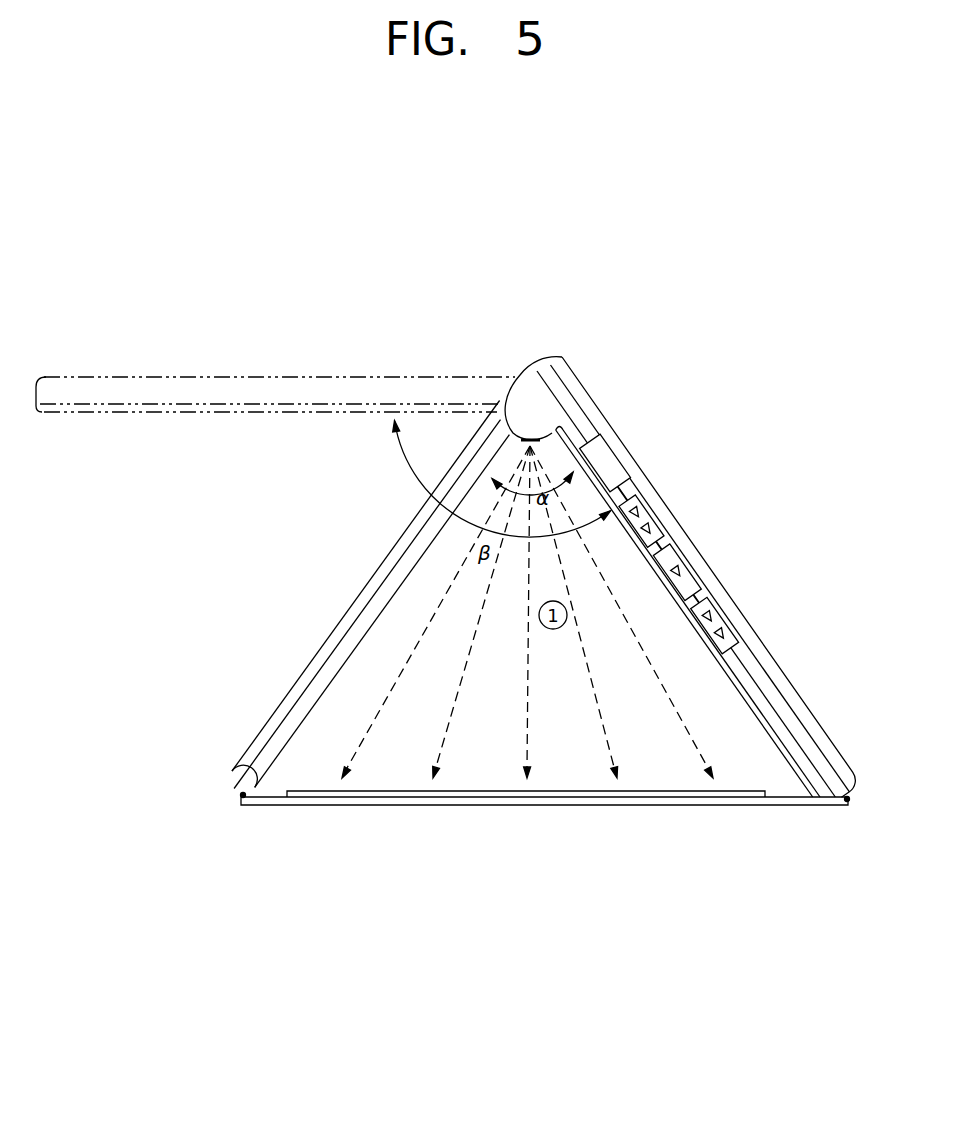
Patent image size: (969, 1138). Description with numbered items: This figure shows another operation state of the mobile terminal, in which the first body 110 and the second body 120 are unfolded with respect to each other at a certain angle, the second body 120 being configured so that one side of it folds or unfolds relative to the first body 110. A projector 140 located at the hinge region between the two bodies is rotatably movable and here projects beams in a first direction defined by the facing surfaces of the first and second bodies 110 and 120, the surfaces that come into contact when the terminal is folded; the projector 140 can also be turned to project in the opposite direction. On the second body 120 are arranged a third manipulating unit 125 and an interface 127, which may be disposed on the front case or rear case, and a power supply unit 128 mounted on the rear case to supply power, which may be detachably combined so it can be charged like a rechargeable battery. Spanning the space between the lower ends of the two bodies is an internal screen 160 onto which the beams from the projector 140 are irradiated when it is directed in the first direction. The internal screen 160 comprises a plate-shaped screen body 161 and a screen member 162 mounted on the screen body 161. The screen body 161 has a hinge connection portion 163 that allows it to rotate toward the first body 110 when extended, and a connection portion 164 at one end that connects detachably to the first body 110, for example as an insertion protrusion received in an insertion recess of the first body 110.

The first body 110 is at (352, 568).
The second body 120 is at (696, 577).
The third manipulating unit 125 is at (688, 565).
The interface 127 is at (610, 455).
The power supply unit 128 is at (768, 656).
The projector 140 is at (560, 434).
The internal screen 160 is at (548, 865).
The screen body 161 is at (479, 806).
The screen member 162 is at (572, 792).
The hinge connection portion 163 is at (849, 846).
The connection portion 164 is at (243, 806).